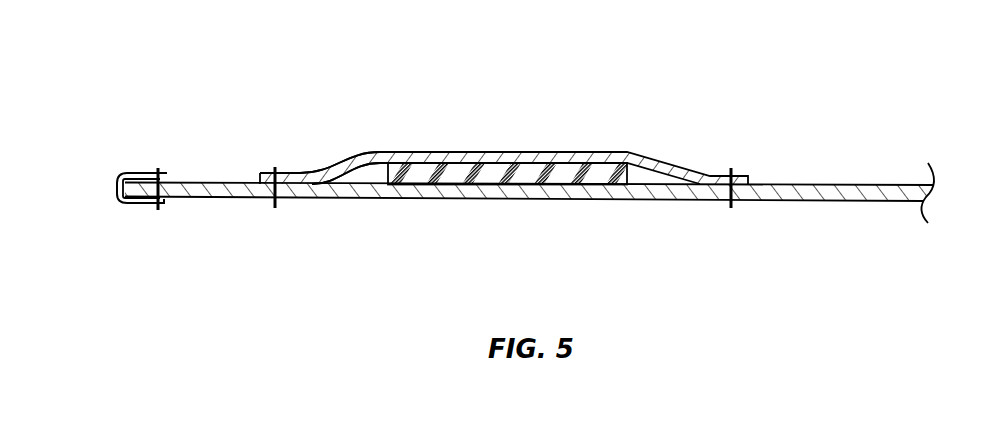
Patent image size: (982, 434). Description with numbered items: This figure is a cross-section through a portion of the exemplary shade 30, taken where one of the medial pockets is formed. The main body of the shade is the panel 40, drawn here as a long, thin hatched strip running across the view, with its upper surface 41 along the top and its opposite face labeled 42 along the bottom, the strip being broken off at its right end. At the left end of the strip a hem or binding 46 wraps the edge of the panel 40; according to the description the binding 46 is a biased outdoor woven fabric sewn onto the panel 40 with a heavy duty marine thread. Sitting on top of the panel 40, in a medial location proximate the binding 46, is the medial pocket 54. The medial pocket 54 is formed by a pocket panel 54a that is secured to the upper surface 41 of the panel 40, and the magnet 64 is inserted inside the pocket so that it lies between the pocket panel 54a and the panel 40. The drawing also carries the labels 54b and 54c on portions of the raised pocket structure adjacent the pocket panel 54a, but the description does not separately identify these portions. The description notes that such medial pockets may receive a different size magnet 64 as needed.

The shade 30 is at (222, 94).
The panel 40 is at (848, 166).
The upper surface 41 is at (868, 185).
The second (lower) surface of strap 42 is at (867, 203).
The binding 46 is at (117, 181).
The medial pocket 54 is at (630, 132).
The pocket panel 54a is at (388, 151).
The second pad portion (top layer) 54b is at (455, 152).
The third pad portion (lower layer) 54c is at (378, 160).
The magnet 64 is at (522, 177).